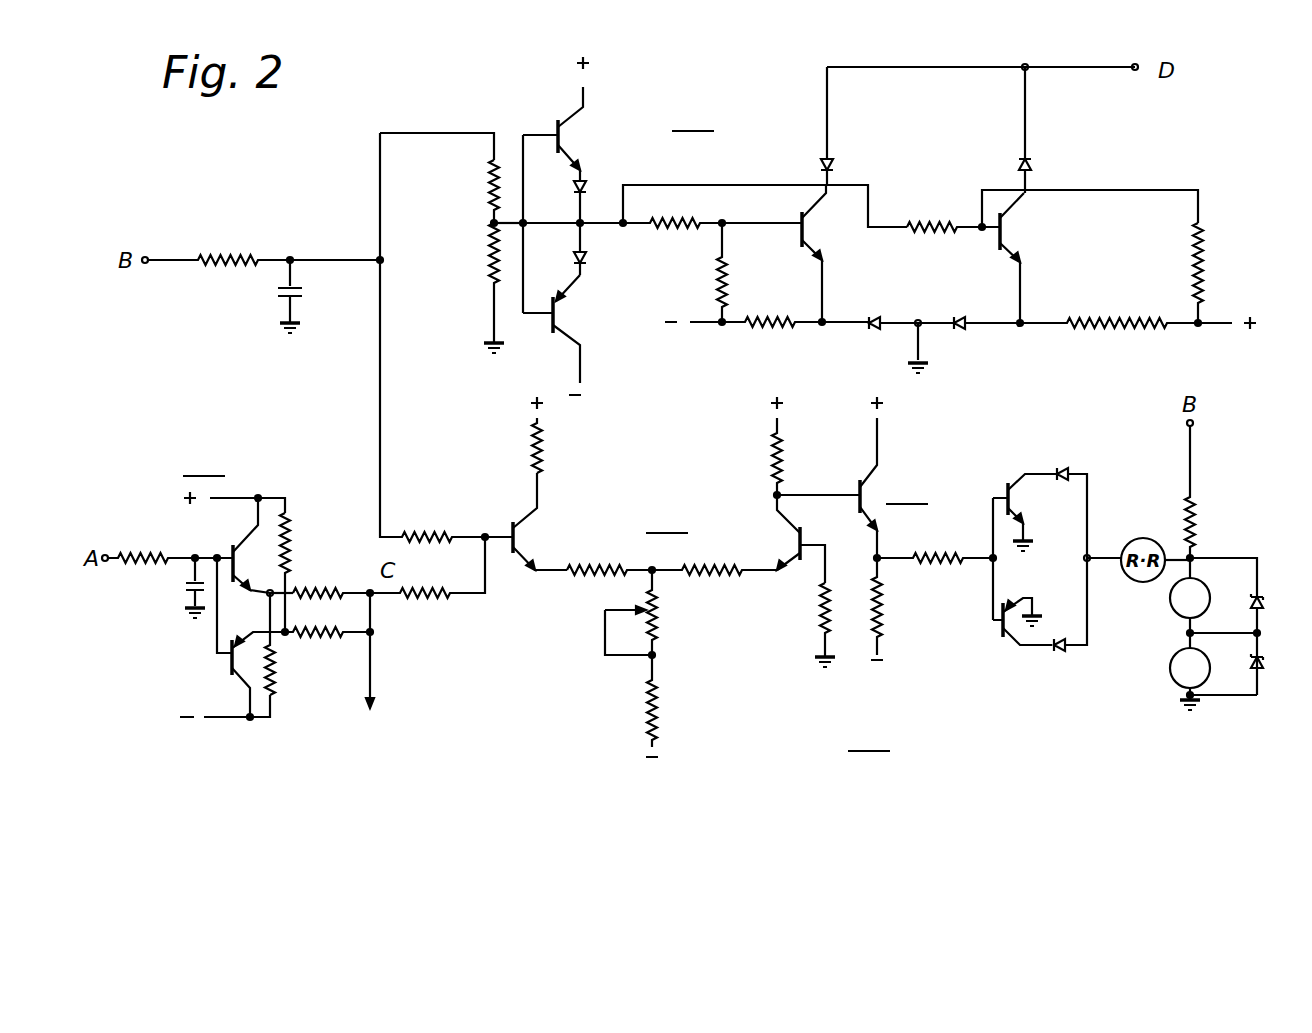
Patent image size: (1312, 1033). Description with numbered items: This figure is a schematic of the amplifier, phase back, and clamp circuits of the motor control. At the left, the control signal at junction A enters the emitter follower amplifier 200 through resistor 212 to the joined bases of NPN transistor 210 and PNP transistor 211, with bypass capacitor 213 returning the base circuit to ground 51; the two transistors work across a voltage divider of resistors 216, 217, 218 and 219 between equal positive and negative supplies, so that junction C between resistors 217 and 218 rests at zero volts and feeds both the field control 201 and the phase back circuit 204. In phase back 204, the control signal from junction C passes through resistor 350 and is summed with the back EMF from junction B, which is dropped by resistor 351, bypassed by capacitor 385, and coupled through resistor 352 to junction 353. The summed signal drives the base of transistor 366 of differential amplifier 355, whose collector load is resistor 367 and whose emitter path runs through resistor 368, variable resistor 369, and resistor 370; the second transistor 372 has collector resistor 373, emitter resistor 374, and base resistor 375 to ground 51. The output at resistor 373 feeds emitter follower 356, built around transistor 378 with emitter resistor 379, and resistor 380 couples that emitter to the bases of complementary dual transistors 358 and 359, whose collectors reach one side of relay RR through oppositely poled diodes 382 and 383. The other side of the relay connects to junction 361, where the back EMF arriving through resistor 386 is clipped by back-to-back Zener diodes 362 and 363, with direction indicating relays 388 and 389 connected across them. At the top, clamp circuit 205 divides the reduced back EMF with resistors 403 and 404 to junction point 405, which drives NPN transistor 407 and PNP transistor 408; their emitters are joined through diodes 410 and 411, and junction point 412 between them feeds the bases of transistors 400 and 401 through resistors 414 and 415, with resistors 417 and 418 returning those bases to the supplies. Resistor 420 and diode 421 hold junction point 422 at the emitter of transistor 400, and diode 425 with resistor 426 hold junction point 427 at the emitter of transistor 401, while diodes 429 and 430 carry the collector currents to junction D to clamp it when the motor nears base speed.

The ground 51 is at (270, 330).
The emitter follower amplifier 200 is at (204, 463).
The field control 201 is at (369, 687).
The phase back circuit 204 is at (869, 738).
The clamp circuit 205 is at (693, 118).
The NPN transistor 210 is at (230, 548).
The PNP transistor 211 is at (227, 676).
The resistor 212 is at (154, 553).
The bypass capacitor 213 is at (180, 584).
The resistor 216 is at (292, 524).
The resistor 217 is at (331, 628).
The resistor 218 is at (330, 582).
The resistor 219 is at (282, 678).
The resistor 350 is at (432, 600).
The resistor 351 is at (262, 252).
The resistor 352 is at (447, 528).
The junction 353 is at (485, 530).
The differential amplifier 355 is at (667, 520).
The emitter follower 356 is at (907, 491).
The dual transistor 358 is at (1012, 480).
The dual transistor 359 is at (998, 640).
The junction 361 is at (1200, 556).
The Zener diode 362 is at (1253, 596).
The Zener diode 363 is at (1253, 662).
The NPN transistor 366 is at (520, 535).
The resistor 367 is at (548, 446).
The resistor 368 is at (569, 582).
The variable resistor 369 is at (666, 610).
The resistor 370 is at (666, 706).
The NPN transistor 372 is at (804, 541).
The resistor 373 is at (768, 474).
The resistor 374 is at (735, 560).
The resistor 375 is at (818, 608).
The NPN transistor 378 is at (858, 472).
The resistor 379 is at (886, 600).
The resistor 380 is at (927, 552).
The diode 382 is at (1068, 470).
The diode 383 is at (1055, 660).
The capacitor 385 is at (272, 296).
The resistor 386 is at (1200, 502).
The relay 388 is at (1168, 605).
The relay 389 is at (1170, 670).
The transistor 400 is at (796, 210).
The transistor 401 is at (994, 248).
The resistor 403 is at (487, 182).
The resistor 404 is at (482, 264).
The junction point 405 is at (490, 226).
The NPN transistor 407 is at (552, 116).
The PNP transistor 408 is at (552, 340).
The diode 410 is at (588, 178).
The diode 411 is at (589, 262).
The junction point 412 is at (578, 221).
The resistor 414 is at (690, 212).
The resistor 415 is at (920, 240).
The resistor 417 is at (716, 283).
The resistor 418 is at (1194, 263).
The resistor 420 is at (764, 338).
The diode 421 is at (878, 314).
The junction point 422 is at (822, 338).
The diode 425 is at (971, 332).
The resistor 426 is at (1110, 335).
The junction point 427 is at (1030, 320).
The diode 429 is at (840, 166).
The diode 430 is at (1012, 160).